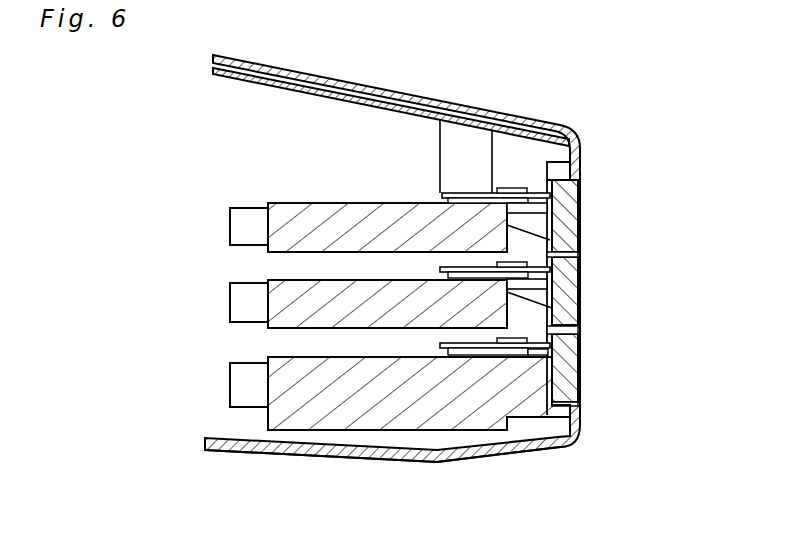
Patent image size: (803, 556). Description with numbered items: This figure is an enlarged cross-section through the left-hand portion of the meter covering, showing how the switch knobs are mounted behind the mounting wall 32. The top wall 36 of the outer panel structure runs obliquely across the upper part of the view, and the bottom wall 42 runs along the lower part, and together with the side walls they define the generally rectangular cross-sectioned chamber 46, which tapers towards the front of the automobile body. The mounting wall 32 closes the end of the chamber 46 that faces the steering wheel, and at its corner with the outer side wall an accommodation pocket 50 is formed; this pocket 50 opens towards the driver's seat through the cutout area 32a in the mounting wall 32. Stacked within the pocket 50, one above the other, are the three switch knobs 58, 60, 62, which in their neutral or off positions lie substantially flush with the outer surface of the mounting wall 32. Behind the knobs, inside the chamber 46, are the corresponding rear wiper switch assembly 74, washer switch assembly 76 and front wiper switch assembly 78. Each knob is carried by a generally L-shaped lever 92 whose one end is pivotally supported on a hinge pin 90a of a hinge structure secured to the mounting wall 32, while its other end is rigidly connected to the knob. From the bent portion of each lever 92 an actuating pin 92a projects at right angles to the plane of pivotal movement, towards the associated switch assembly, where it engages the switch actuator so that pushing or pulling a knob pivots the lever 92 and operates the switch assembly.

The top wall 36 is at (343, 83).
The mounting wall 32 is at (582, 140).
The cutout area 32a is at (578, 180).
The bottom wall 42 is at (360, 456).
The chamber 46 is at (283, 157).
The accommodation pocket 50 is at (557, 166).
The switch knob 58 is at (565, 212).
The switch knob 60 is at (565, 288).
The switch knob 62 is at (565, 375).
The rear wiper switch assembly 74 is at (302, 212).
The washer switch assembly 76 is at (312, 290).
The front wiper switch assembly 78 is at (315, 372).
The hinge pin 90a is at (512, 188).
The L-shaped lever 92 is at (473, 193).
The actuating pin 92a is at (440, 200).